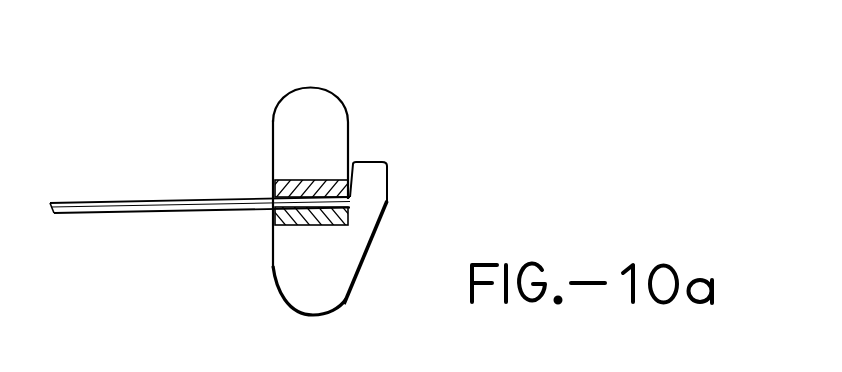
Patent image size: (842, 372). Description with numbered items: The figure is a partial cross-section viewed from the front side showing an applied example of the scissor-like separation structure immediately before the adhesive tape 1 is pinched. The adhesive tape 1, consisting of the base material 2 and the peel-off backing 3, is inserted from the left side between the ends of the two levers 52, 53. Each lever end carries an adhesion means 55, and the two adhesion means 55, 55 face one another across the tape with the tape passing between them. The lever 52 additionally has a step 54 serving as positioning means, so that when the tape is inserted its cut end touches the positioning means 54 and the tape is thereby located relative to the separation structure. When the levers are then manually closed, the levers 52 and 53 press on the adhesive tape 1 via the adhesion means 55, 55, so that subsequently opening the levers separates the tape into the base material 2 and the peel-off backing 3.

The adhesive tape 1 is at (200, 209).
The base material 2 is at (147, 200).
The peel-off backing 3 is at (101, 216).
The lever end 52 is at (317, 286).
The lever end 53 is at (313, 106).
The step 54 is at (371, 174).
The adhesion means 55 is at (273, 193).